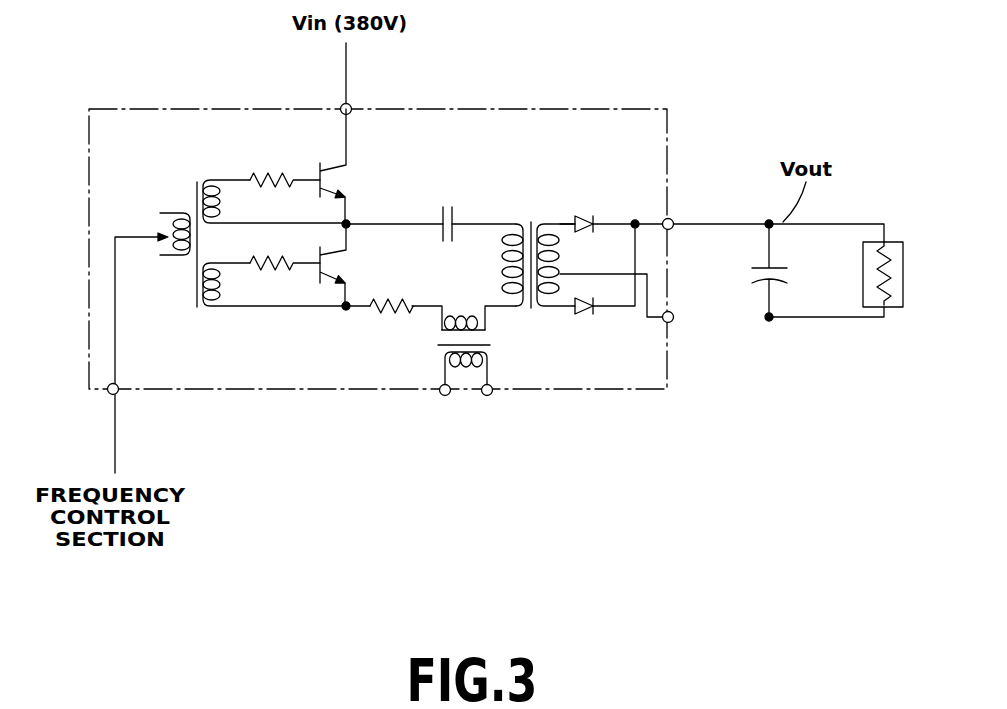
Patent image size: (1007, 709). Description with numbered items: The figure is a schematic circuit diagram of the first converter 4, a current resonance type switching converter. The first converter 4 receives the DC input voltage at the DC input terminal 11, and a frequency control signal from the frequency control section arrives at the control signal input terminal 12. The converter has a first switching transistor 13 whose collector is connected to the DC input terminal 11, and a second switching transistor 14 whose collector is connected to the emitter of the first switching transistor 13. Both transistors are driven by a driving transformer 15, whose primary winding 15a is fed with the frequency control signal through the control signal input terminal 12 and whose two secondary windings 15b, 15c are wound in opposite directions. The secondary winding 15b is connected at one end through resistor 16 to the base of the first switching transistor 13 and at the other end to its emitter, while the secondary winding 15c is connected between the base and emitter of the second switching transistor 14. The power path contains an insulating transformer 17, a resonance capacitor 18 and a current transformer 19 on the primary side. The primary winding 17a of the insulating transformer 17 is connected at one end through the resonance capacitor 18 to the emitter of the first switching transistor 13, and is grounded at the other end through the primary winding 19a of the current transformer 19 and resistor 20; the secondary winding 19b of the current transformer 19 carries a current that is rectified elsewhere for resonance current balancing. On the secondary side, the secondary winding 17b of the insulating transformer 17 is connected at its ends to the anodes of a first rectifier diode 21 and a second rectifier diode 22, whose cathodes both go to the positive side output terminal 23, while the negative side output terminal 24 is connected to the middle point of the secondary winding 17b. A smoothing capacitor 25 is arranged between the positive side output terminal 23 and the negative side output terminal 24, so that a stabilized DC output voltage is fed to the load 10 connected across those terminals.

The first converter 4 is at (585, 108).
The load 10 is at (893, 306).
The DC input terminal 11 is at (352, 106).
The control signal input terminal 12 is at (116, 394).
The first switching transistor 13 is at (341, 180).
The second switching transistor 14 is at (338, 262).
The driving transformer 15 is at (174, 196).
The primary winding 15a is at (163, 257).
The secondary winding 15b is at (205, 180).
The secondary winding 15c is at (205, 308).
The resistor 16 is at (282, 170).
The insulating transformer 17 is at (275, 271).
The primary winding 17a is at (500, 266).
The secondary winding 17b is at (562, 266).
The resonance capacitor 18 is at (446, 202).
The current transformer 19 is at (514, 340).
The primary winding 19a is at (455, 314).
The secondary winding 19b is at (489, 360).
The resistor 20 is at (392, 313).
The first rectifier diode 21 is at (578, 218).
The second rectifier diode 22 is at (590, 319).
The positive side output terminal 23 is at (672, 219).
The negative side output terminal 24 is at (673, 322).
The smoothing capacitor 25 is at (787, 272).